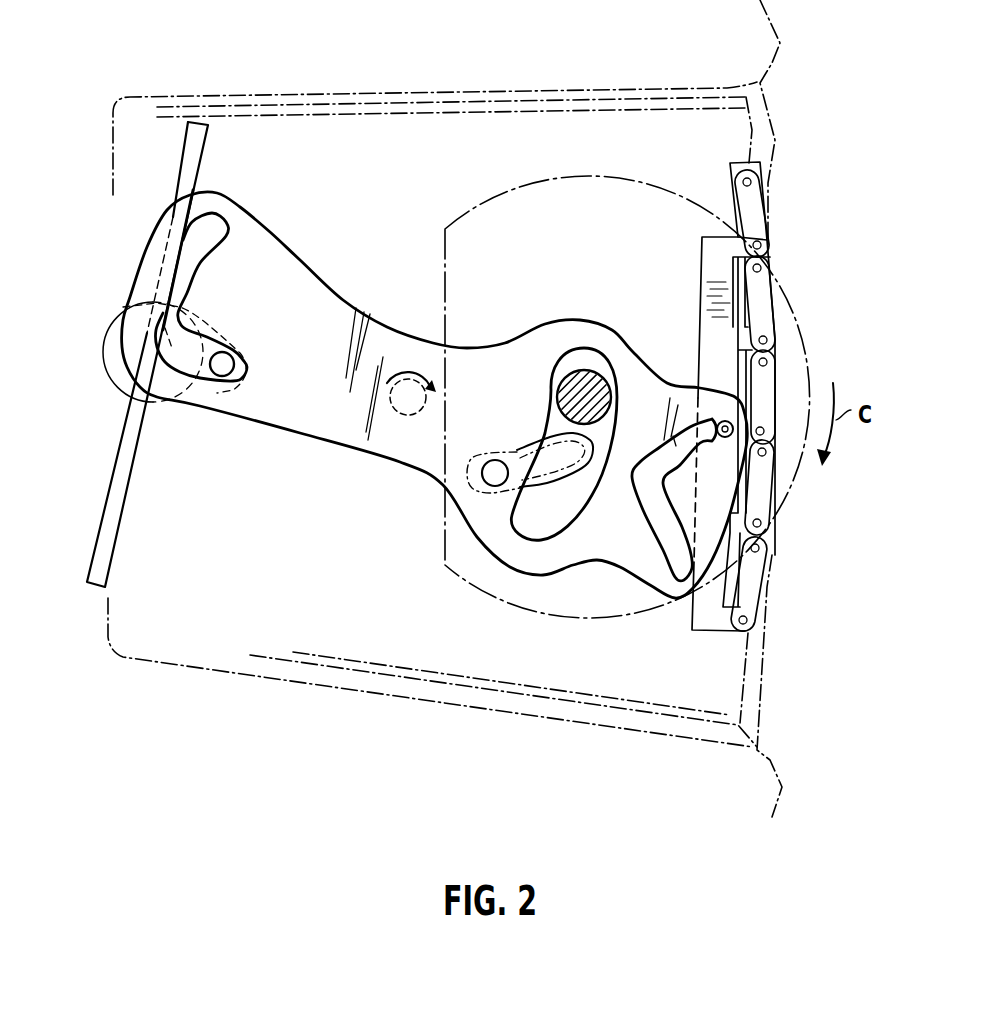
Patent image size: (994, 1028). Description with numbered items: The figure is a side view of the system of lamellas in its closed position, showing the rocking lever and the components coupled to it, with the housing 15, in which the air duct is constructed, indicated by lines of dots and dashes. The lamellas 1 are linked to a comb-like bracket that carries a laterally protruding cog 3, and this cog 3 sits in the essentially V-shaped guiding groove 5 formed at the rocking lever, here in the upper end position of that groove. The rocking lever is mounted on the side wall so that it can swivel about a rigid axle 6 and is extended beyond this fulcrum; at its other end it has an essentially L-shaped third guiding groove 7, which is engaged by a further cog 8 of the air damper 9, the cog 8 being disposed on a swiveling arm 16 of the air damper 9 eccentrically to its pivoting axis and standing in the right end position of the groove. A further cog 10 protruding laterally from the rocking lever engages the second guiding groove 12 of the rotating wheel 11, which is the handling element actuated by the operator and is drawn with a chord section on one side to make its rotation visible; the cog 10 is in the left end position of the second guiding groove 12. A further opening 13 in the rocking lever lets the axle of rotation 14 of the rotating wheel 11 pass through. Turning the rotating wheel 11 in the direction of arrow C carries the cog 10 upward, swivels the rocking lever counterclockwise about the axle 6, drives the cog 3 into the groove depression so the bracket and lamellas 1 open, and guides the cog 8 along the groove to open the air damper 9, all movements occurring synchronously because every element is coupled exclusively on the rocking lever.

The lamellas 1 is at (767, 283).
The cog 3 is at (760, 488).
The guiding groove 5 is at (670, 530).
The rigid axle 6 is at (407, 406).
The third guiding groove 7 is at (207, 247).
The cog 8 is at (222, 372).
The air damper 9 is at (117, 473).
The cog 10 is at (490, 478).
The rotating wheel 11 is at (508, 205).
The second guiding groove 12 is at (517, 452).
The opening 13 is at (567, 363).
The axle of rotation 14 is at (594, 388).
The housing 15 is at (288, 96).
The swiveling arm 16 is at (110, 342).